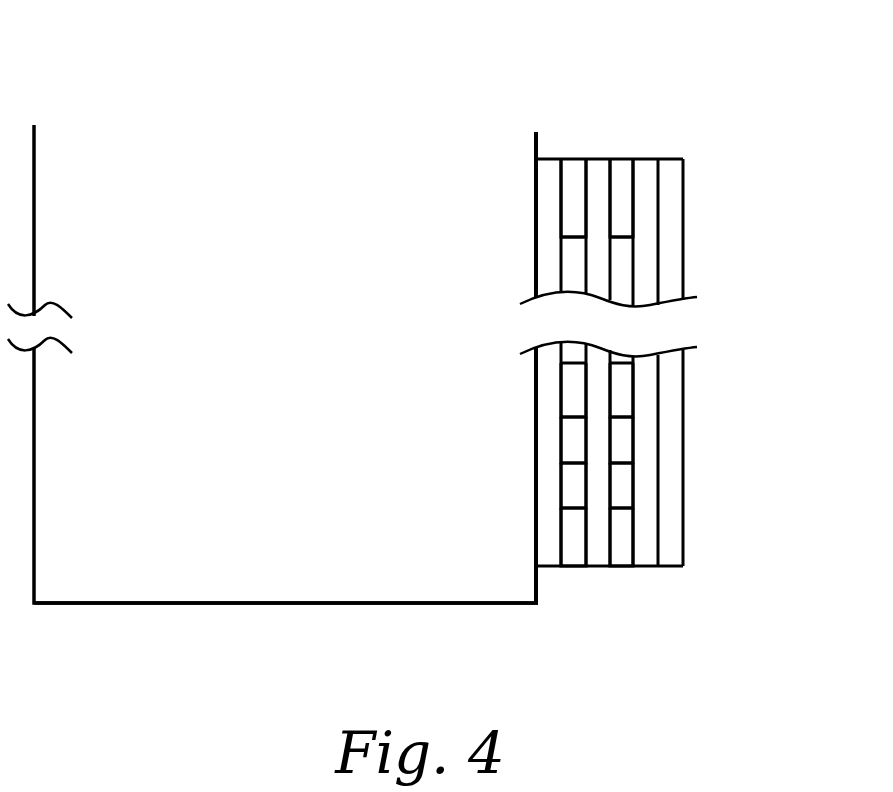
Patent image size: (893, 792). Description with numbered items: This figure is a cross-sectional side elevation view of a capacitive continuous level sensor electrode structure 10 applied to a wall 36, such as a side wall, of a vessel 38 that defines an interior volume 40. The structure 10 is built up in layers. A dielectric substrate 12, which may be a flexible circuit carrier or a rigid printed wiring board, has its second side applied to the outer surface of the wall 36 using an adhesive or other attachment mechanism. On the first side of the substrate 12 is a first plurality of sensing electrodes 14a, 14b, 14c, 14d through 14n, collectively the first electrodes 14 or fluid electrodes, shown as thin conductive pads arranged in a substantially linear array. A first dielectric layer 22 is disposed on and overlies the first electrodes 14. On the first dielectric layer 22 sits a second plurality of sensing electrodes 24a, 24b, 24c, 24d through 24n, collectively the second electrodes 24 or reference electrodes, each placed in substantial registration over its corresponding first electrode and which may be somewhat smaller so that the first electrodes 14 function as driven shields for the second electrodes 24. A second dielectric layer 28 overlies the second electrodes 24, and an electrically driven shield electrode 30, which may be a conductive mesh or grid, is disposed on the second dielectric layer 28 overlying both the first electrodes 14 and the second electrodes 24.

The capacitive continuous level sensor electrode structure 10 is at (588, 367).
The dielectric substrate 12 is at (552, 579).
The first electrodes 14 is at (576, 148).
The first sensing electrode 14a is at (550, 538).
The first sensing electrode 14b is at (550, 490).
The first sensing electrode 14c is at (550, 444).
The first sensing electrode 14d is at (550, 397).
The first sensing electrode 14n is at (550, 191).
The first dielectric layer 22 is at (600, 579).
The second electrodes 24 is at (626, 148).
The second sensing electrode 24a is at (645, 543).
The second sensing electrode 24b is at (645, 493).
The second sensing electrode 24c is at (645, 448).
The second sensing electrode 24d is at (645, 388).
The second sensing electrode 24n is at (645, 200).
The second dielectric layer 28 is at (648, 579).
The shield electrode 30 is at (680, 579).
The wall 36 is at (526, 153).
The vessel 38 is at (290, 622).
The interior volume 40 is at (289, 186).